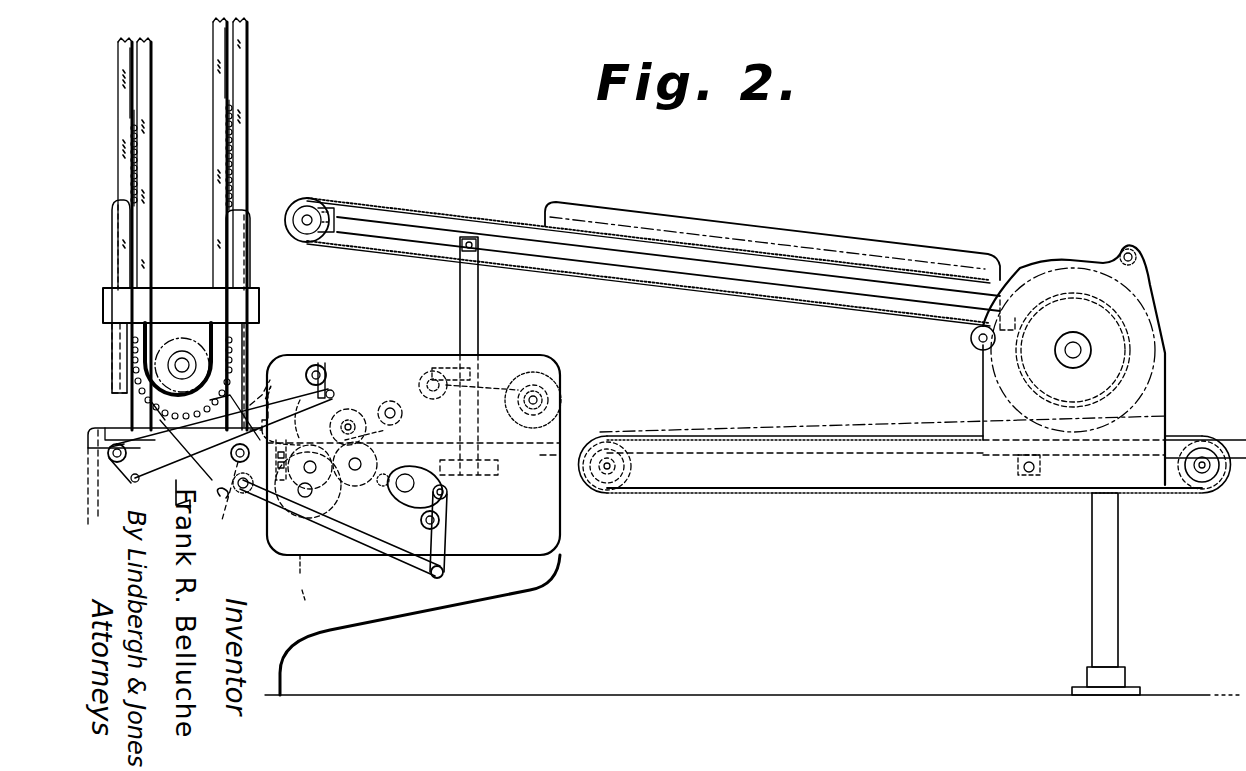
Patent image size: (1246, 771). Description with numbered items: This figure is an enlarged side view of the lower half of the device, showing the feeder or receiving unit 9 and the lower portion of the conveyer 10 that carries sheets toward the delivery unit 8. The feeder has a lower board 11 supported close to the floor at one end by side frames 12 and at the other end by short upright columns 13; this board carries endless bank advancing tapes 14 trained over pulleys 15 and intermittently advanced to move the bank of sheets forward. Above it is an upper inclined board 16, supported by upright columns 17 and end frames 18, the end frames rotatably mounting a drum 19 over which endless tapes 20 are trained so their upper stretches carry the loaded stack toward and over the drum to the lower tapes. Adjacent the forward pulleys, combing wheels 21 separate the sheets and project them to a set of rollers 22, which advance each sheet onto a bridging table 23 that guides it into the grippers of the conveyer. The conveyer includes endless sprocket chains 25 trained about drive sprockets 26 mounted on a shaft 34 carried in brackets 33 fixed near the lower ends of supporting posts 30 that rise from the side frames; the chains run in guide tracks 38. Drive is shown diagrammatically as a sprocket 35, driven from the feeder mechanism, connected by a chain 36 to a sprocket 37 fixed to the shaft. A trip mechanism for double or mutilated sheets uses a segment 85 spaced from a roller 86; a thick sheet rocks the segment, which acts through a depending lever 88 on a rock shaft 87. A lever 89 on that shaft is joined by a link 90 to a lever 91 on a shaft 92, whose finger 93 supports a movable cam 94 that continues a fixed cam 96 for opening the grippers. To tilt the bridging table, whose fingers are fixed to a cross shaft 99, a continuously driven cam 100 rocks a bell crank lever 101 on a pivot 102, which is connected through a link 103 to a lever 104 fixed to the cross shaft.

The delivery unit 8 is at (890, 418).
The feeder or receiving unit 9 is at (520, 210).
The conveyer 10 is at (262, 108).
The lower board 11 is at (1232, 440).
The side frames 12 is at (372, 628).
The short upright columns 13 is at (1092, 542).
The endless bank advancing tapes 14 is at (666, 494).
The pulleys 15 is at (632, 468).
The upper inclined board 16 is at (580, 258).
The upright columns 17 is at (460, 300).
The end frames 18 is at (1165, 402).
The drum 19 is at (1050, 322).
The endless tapes 20 is at (748, 306).
The combing wheels 21 is at (564, 396).
The rollers 22 is at (358, 410).
The bridging table 23 is at (200, 504).
The endless sprocket chains 25 is at (232, 172).
The drive sprockets 26 is at (215, 332).
The supporting posts 30 is at (118, 246).
The brackets 33 is at (188, 288).
The shaft 34 is at (185, 358).
The sprocket 35 is at (413, 477).
The chain 36 is at (262, 380).
The sprocket 37 is at (112, 362).
The guide tracks 38 is at (122, 104).
The segment 85 is at (356, 410).
The roller 86 is at (330, 500).
The rock shaft 87 is at (316, 368).
The depending lever 88 is at (304, 390).
The lever 89 is at (322, 362).
The link 90 is at (221, 444).
The lever 91 is at (112, 490).
The shaft 92 is at (108, 428).
The finger 93 is at (136, 455).
The movable cam 94 is at (168, 430).
The fixed cam 96 is at (212, 425).
The cross shaft 99 is at (230, 456).
The cam 100 is at (420, 476).
The bell crank lever 101 is at (450, 498).
The pivot 102 is at (445, 528).
The link 103 is at (358, 550).
The lever 104 is at (238, 500).